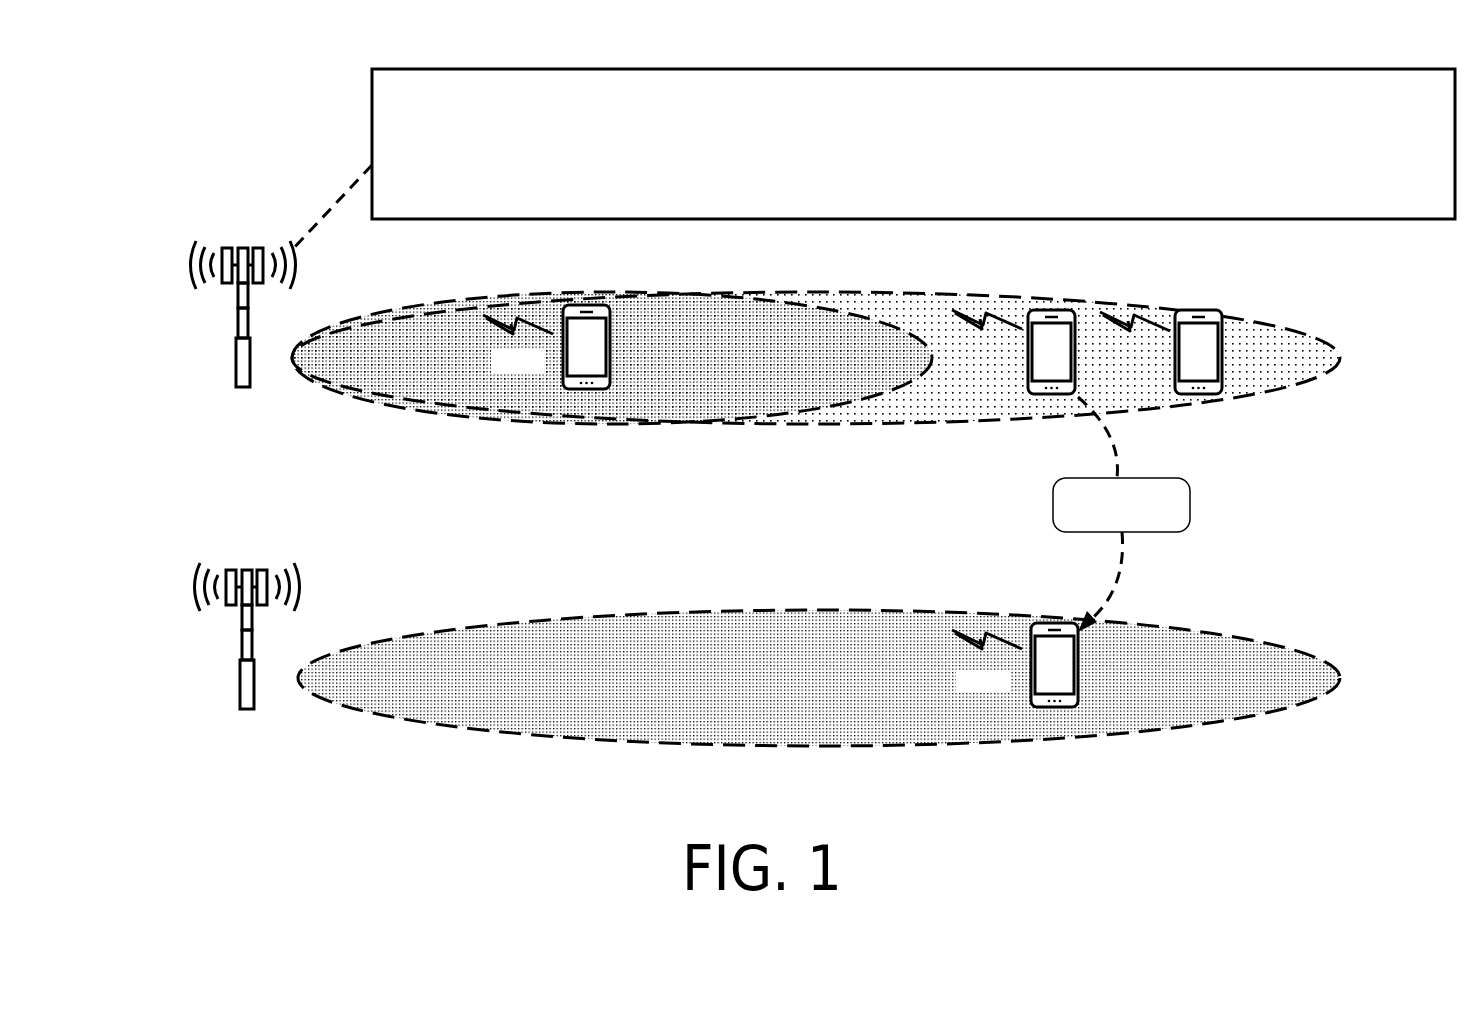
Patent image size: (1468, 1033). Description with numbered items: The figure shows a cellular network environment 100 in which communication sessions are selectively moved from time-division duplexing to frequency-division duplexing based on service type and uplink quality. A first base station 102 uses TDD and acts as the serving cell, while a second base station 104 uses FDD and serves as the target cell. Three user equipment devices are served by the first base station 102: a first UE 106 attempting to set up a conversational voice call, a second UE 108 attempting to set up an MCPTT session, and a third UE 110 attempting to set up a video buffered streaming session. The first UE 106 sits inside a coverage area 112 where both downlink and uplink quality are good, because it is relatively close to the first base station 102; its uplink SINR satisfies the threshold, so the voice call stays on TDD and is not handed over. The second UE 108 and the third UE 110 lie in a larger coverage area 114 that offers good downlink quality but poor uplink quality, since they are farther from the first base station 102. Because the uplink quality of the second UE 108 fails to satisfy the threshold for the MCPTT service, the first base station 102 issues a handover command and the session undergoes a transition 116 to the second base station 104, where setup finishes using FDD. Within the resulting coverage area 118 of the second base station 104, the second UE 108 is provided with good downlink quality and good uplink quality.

The cellular network environment 100 is at (166, 64).
The first base station 102 is at (237, 250).
The second base station 104 is at (247, 570).
The first UE 106 is at (585, 392).
The second UE 108 is at (1052, 397).
The third UE 110 is at (1197, 398).
The coverage area 112 is at (727, 320).
The coverage area 114 is at (930, 320).
The transition 116 is at (1190, 505).
The coverage area 118 is at (768, 630).